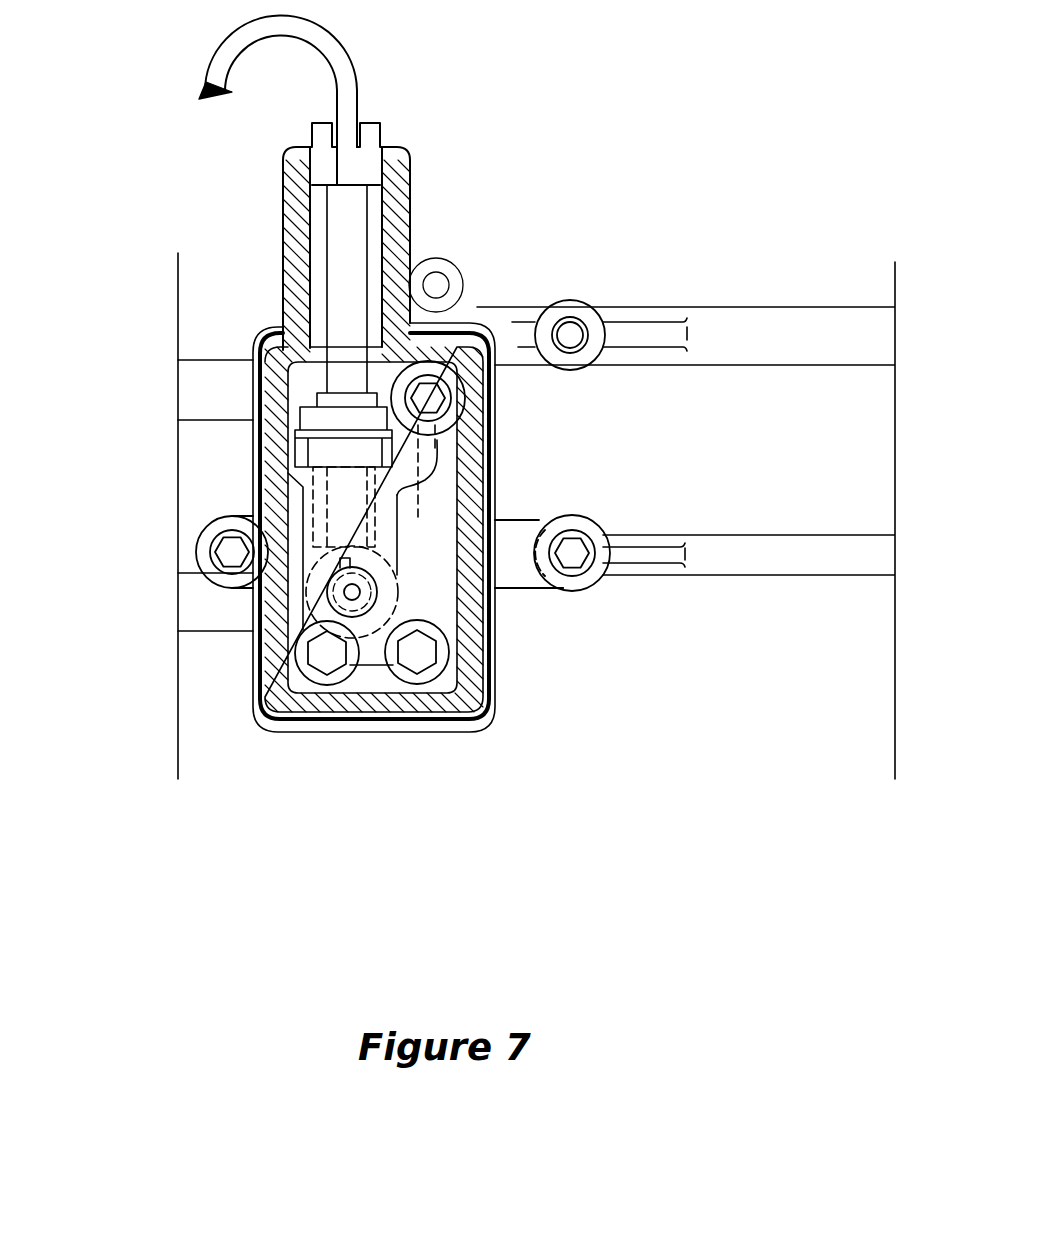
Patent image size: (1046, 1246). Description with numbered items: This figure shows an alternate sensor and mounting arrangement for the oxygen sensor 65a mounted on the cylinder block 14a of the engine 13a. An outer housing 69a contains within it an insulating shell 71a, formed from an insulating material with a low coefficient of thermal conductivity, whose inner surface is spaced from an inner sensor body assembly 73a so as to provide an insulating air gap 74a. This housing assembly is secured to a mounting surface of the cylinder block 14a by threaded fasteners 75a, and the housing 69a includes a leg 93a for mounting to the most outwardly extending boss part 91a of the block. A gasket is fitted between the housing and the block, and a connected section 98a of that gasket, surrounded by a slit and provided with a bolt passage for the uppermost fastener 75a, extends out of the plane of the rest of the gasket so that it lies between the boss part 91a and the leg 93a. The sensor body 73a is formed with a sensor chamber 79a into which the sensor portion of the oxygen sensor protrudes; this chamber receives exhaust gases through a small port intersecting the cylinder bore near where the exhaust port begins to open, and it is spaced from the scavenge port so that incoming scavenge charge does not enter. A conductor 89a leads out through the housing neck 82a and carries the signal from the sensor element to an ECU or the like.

The frame 13a is at (158, 331).
The cylinder block 14a is at (200, 462).
The sensor 65a is at (470, 161).
The outer housing 69a is at (483, 703).
The insulating shell 71a is at (465, 672).
The inner sensor body assembly 73a is at (408, 565).
The insulating air gap 74a is at (443, 617).
The threaded fasteners 75a is at (437, 397).
The sensor chamber 79a is at (378, 520).
The cable housing neck 82a is at (273, 348).
The conductor 89a is at (352, 70).
The boss part 91a is at (314, 386).
The leg 93a is at (497, 432).
The connected section 98a is at (437, 450).